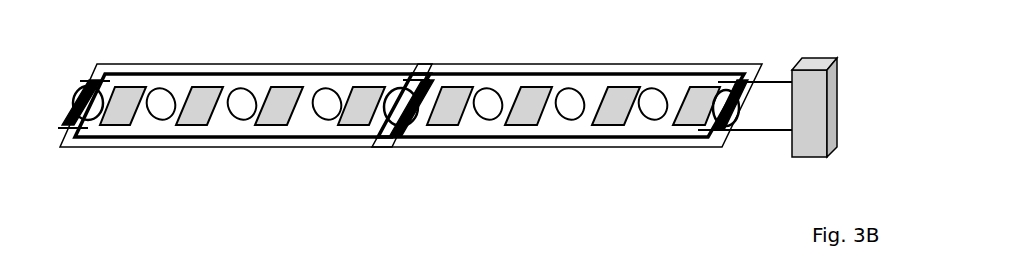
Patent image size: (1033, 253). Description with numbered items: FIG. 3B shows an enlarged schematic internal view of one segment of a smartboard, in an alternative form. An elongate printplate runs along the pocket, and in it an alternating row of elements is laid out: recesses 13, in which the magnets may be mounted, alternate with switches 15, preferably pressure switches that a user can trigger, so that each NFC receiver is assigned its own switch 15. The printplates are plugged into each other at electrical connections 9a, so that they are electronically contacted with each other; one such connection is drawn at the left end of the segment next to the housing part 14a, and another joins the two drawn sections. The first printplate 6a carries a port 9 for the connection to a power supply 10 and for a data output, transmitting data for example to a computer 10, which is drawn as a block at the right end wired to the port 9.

The first printplate 6a is at (632, 128).
The port 9 is at (758, 133).
The electrical connection 9a is at (84, 79).
The power supply, computer 10 is at (807, 82).
The recess 13 is at (159, 109).
The housing part 14a is at (70, 138).
The switch, pressure switch 15 is at (528, 108).